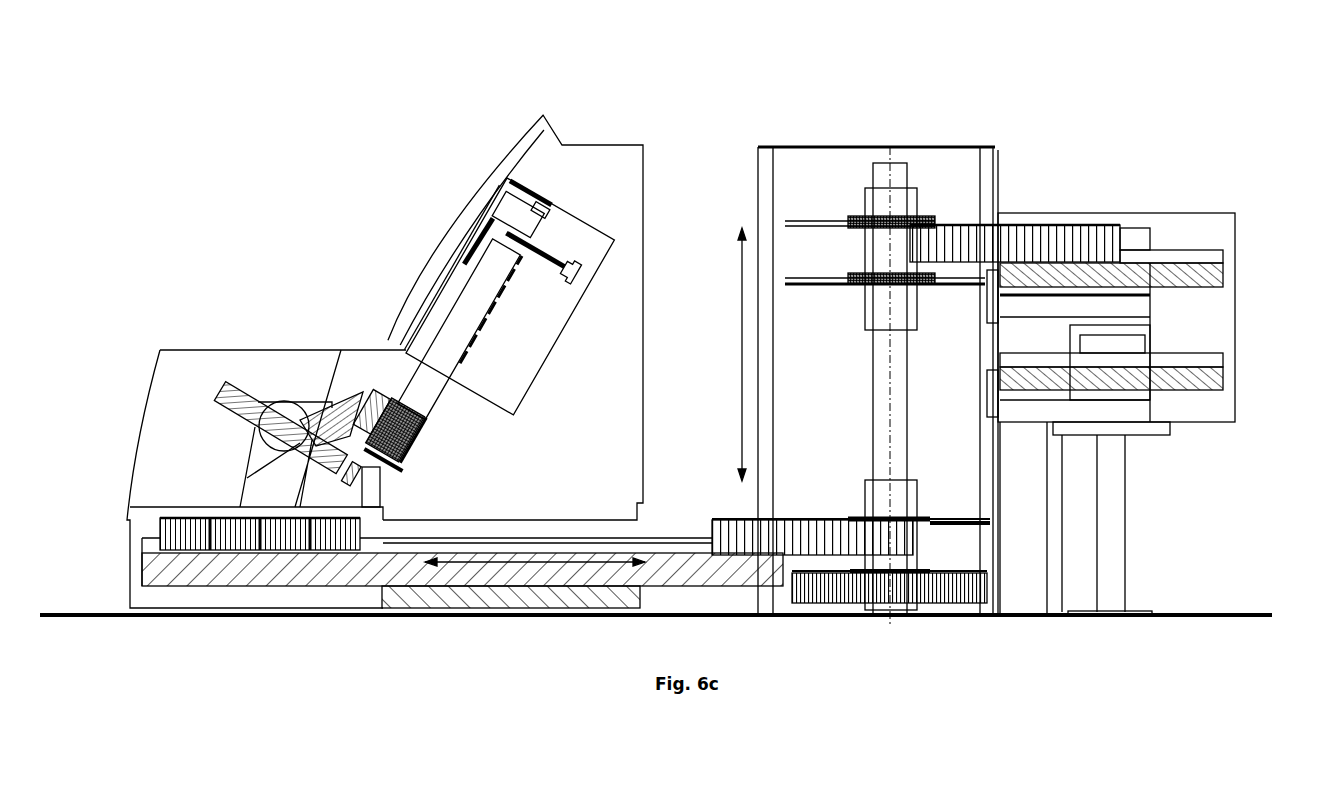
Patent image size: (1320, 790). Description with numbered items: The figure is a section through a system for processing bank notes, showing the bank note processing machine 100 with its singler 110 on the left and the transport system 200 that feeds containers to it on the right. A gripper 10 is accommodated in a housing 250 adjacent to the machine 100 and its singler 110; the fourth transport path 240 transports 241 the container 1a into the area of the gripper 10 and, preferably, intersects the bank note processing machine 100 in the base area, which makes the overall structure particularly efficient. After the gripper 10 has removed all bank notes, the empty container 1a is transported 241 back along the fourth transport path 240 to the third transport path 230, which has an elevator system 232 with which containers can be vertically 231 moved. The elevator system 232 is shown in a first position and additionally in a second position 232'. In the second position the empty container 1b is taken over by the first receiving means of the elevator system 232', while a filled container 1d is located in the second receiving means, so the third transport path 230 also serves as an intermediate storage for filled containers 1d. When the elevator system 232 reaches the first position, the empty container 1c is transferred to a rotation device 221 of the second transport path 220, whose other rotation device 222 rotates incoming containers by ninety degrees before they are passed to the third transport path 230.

The bank note processing machine 100 is at (587, 110).
The singler 110 is at (417, 460).
The gripper 10 is at (277, 402).
The housing 250 is at (167, 350).
The container 1a is at (157, 518).
The fourth transport path 240 is at (462, 547).
The transport movement 241 is at (535, 571).
The transport system 200 is at (1006, 334).
The third transport path 230 is at (849, 369).
The vertical movement 231 is at (723, 354).
The elevator system 232 is at (885, 236).
The elevator system in second position 232' is at (956, 502).
The empty container 1b is at (840, 532).
The empty container 1c is at (1045, 225).
The filled container 1d is at (960, 573).
The second transport path 220 is at (1149, 397).
The rotation device 221 is at (1223, 278).
The rotation device 222 is at (1223, 380).